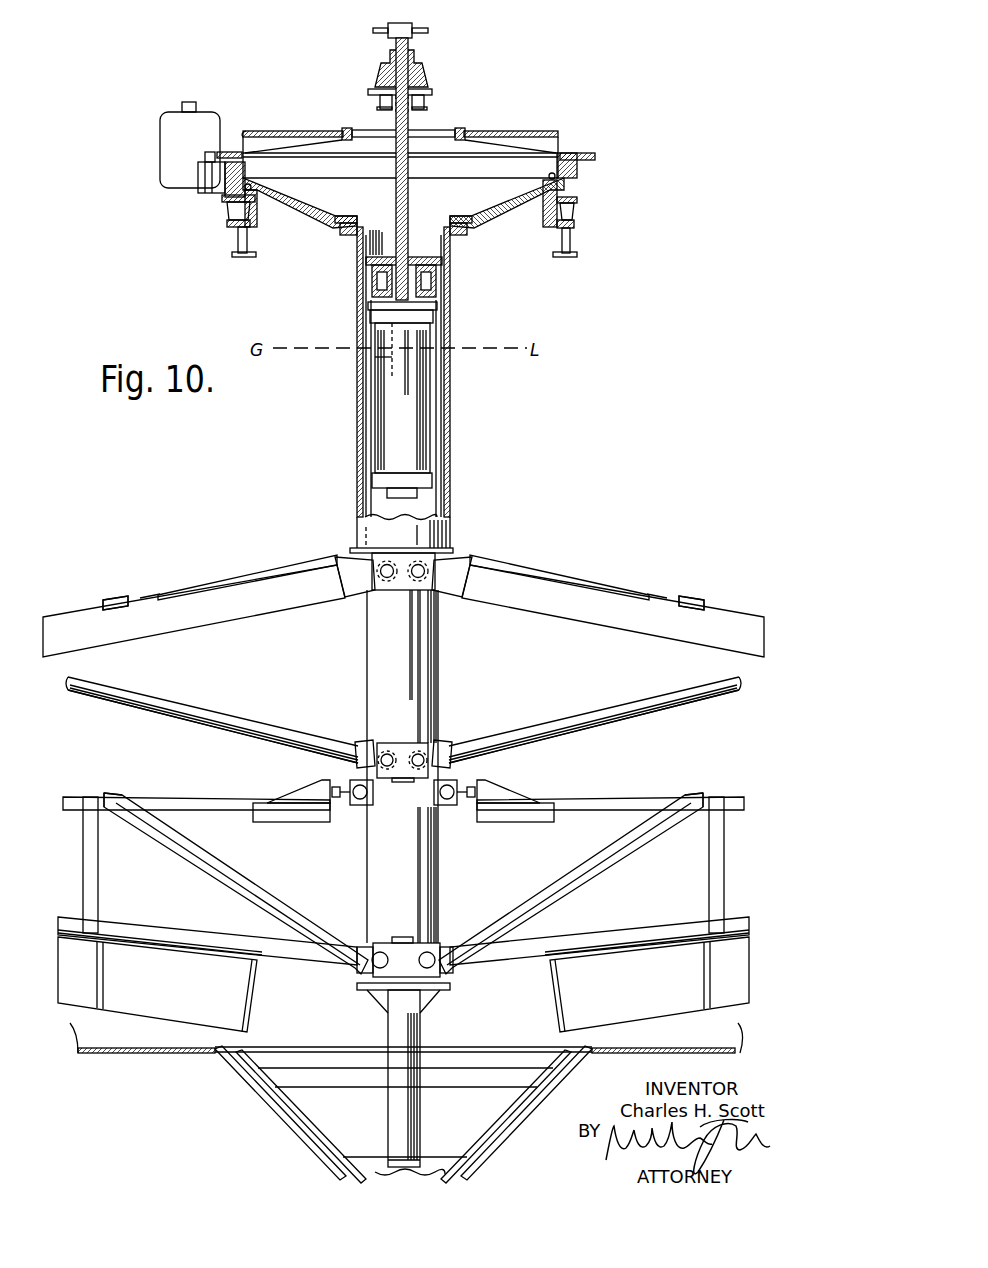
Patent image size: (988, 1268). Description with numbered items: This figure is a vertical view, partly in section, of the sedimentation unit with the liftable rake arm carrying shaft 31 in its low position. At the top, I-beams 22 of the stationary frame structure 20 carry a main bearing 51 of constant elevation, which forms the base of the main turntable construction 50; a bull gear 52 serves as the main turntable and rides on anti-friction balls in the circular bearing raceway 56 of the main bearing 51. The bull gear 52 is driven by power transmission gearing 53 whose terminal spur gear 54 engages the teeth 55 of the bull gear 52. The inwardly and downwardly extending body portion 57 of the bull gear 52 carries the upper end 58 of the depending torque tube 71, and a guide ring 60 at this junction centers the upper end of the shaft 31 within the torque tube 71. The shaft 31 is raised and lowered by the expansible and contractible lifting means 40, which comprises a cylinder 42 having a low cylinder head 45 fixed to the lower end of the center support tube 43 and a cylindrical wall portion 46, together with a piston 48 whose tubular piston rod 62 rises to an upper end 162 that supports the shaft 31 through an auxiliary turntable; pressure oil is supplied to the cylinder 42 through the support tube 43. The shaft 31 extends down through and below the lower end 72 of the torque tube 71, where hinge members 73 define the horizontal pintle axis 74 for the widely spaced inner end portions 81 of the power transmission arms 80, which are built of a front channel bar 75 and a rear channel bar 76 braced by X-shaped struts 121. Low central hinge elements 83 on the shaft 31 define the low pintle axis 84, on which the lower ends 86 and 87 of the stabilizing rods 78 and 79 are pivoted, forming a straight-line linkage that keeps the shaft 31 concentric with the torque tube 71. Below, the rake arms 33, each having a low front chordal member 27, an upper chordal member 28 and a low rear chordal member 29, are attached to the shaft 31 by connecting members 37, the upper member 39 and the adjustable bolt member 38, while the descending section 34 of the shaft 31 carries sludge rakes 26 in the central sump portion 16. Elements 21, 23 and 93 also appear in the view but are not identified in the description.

The central sump portion 16 is at (285, 1118).
The stationary frame structure 20 is at (332, 95).
The bearing support legs 21 is at (378, 101).
The I-beams 22 is at (240, 245).
The frame members 23 is at (82, 862).
The sludge rakes 26 is at (320, 1142).
The low front chordal member 27 is at (210, 940).
The upper chordal member 28 is at (108, 810).
The low rear chordal member 29 is at (105, 935).
The rake arm carrying shaft 31 is at (443, 494).
The rake arms 33 is at (185, 905).
The descending section of shaft 34 is at (422, 1036).
The connecting members 37 is at (392, 952).
The adjustable bolt member 38 is at (345, 782).
The upper member 39 is at (353, 805).
The lifting means 40 is at (296, 452).
The cylinder 42 is at (328, 475).
The center support tube 43 is at (413, 126).
The low cylinder head 45 is at (375, 483).
The cylindrical wall portion 46 is at (380, 430).
The piston 48 is at (360, 322).
The main turntable construction 50 is at (272, 250).
The main bearing 51 is at (258, 210).
The bull gear 52 is at (240, 198).
The power transmission gearing 53 is at (160, 128).
The terminal spur gear 54 is at (200, 185).
The teeth of bull gear 55 is at (232, 185).
The circular bearing raceway 56 is at (548, 200).
The body portion of bull gear 57 is at (468, 222).
The upper end of torque tube 58 is at (460, 236).
The guide ring 60 is at (360, 292).
The tubular piston rod 62 is at (385, 358).
The torque tube 71 is at (450, 302).
The lower end of torque tube 72 is at (452, 527).
The hinge members 73 is at (410, 556).
The pintle axis 74 is at (410, 584).
The front channel bar 75 is at (136, 612).
The rear channel bar 76 is at (151, 610).
The stabilizing rods 78 is at (200, 712).
The stabilizing rods 79 is at (268, 730).
The power transmission arms 80 is at (150, 555).
The inner end portions of power transmission arms 81 is at (318, 572).
The low central hinge elements 83 is at (402, 782).
The low pintle axis 84 is at (415, 752).
The lower end of stabilizing rod 86 is at (445, 745).
The lower end of stabilizing rod 87 is at (362, 745).
The box 93 is at (200, 1015).
The X-shaped cross bracing struts 121 is at (232, 578).
The upper end of tubular piston rod 162 is at (364, 325).